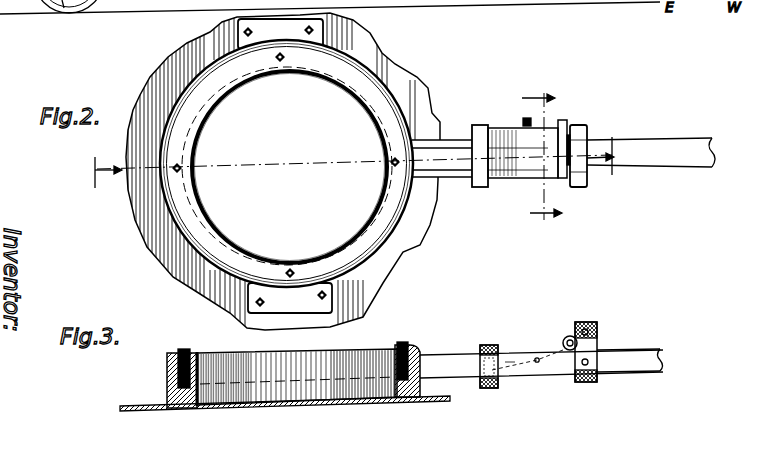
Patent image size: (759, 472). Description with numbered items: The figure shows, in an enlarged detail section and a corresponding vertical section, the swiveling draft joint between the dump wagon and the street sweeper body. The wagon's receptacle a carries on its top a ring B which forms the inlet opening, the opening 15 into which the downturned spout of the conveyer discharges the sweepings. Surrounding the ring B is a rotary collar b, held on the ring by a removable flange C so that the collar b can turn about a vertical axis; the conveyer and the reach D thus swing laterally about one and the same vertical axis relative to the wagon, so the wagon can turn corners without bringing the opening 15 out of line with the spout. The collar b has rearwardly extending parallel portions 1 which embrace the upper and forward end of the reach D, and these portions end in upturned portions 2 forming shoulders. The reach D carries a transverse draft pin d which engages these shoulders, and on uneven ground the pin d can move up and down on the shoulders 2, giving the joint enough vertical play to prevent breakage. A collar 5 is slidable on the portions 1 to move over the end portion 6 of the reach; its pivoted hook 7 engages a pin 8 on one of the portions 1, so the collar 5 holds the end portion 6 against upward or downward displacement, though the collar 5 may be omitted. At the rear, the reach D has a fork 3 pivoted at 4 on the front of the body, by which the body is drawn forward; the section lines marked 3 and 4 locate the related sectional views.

In FIG. 2, the rearwardly extending parallel portions 1 is at (460, 175).
In FIG. 3, the rearwardly extending parallel portions 1 is at (463, 372).
In FIG. 2, the upturned portions 2 is at (587, 130).
In FIG. 3, the upturned portions 2 is at (597, 333).
In FIG. 2, the fork 3 is at (352, 162).
In FIG. 2, the pivot 4 is at (542, 157).
In FIG. 3, the collar 5 is at (492, 345).
In FIG. 3, the end portion of the reach 6 is at (518, 376).
In FIG. 2, the pivoted hook 7 is at (498, 127).
In FIG. 3, the pivoted hook 7 is at (512, 360).
In FIG. 2, the pin 8 is at (527, 120).
In FIG. 3, the pin 8 is at (535, 364).
In FIG. 2, the opening in the top of the dump wagon 15 is at (343, 121).
In FIG. 3, the opening in the top of the dump wagon 15 is at (227, 375).
In FIG. 2, the receptacle a is at (165, 242).
In FIG. 3, the receptacle a is at (168, 408).
In FIG. 2, the rotary collar b is at (417, 223).
In FIG. 3, the rotary collar b is at (167, 376).
In FIG. 2, the ring B is at (208, 88).
In FIG. 3, the ring B is at (207, 353).
In FIG. 3, the removable flange C is at (419, 348).
In FIG. 2, the transverse draft pin d is at (563, 125).
In FIG. 3, the transverse draft pin d is at (566, 338).
In FIG. 2, the reach D is at (665, 148).
In FIG. 3, the reach D is at (642, 365).